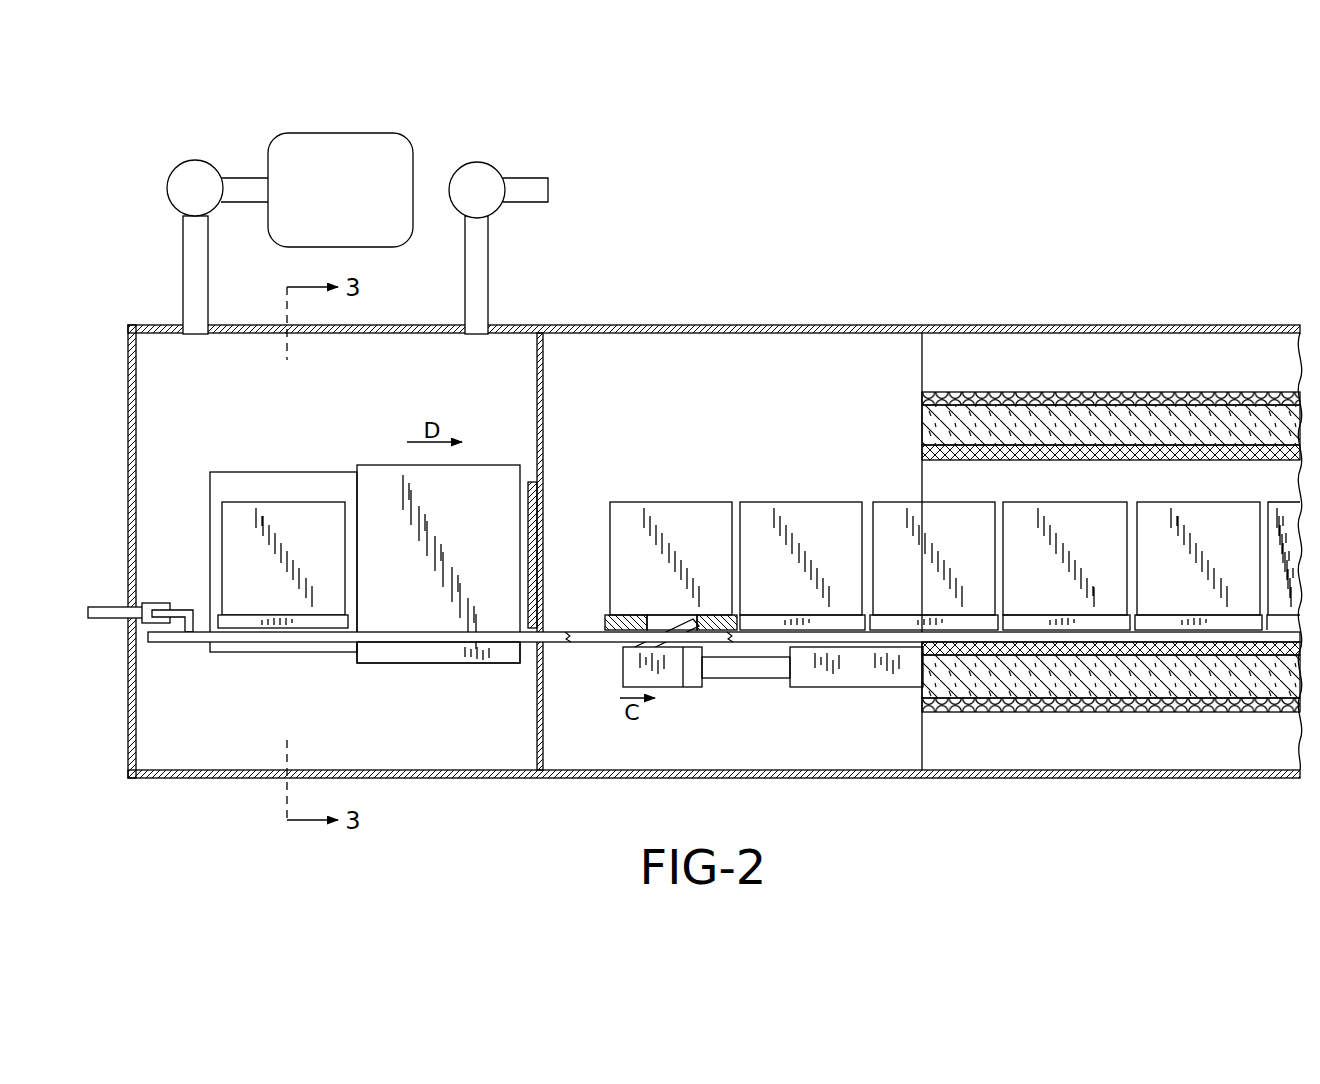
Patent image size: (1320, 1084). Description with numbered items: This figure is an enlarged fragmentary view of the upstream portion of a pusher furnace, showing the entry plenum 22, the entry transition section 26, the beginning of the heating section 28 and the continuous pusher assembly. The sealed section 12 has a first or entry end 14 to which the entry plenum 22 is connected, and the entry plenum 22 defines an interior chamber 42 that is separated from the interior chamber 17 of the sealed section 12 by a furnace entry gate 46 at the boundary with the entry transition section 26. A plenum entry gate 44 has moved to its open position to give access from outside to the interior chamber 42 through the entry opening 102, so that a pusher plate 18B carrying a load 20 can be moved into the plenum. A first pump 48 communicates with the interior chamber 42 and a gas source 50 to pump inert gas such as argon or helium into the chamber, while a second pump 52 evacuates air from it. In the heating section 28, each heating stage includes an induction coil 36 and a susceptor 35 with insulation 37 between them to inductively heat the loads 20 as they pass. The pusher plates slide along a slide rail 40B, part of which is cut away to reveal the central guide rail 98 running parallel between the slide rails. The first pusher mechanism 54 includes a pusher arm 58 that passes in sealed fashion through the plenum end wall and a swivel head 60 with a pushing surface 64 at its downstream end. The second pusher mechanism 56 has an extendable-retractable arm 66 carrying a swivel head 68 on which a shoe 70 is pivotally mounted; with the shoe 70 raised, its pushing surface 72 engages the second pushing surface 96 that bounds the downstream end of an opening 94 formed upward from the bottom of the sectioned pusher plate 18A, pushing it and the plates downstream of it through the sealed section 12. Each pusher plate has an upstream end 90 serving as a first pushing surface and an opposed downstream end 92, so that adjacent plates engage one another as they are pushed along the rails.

The sealed section 12 is at (966, 318).
The first or entry end 14 is at (542, 325).
The interior chamber 17 is at (1212, 360).
The pusher plate 18A is at (611, 632).
The pusher plate 18B is at (308, 628).
The load 20 is at (308, 514).
The entry plenum 22 is at (407, 779).
The entry transition section 26 is at (727, 322).
The heating section 28 is at (1160, 324).
The susceptor 35 is at (1098, 444).
The induction coil 36 is at (1041, 390).
The insulation 37 is at (921, 421).
The slide rail 40B is at (405, 643).
The interior chamber 42 is at (482, 733).
The plenum entry gate 44 is at (488, 476).
The furnace entry gate 46 is at (532, 527).
The first pump 48 is at (191, 161).
The gas source 50 is at (337, 133).
The second pump 52 is at (476, 161).
The first pusher mechanism 54 is at (165, 632).
The second pusher mechanism 56 is at (790, 692).
The pusher arm 58 is at (103, 620).
The swivel head 60 is at (178, 609).
The pushing surface 64 is at (200, 612).
The extendable-retractable arm 66 is at (760, 676).
The swivel head 68 is at (693, 684).
The shoe 70 is at (674, 656).
The pushing surface 72 is at (688, 619).
The upstream end 90 is at (195, 634).
The downstream end 92 is at (355, 618).
The opening 94 is at (622, 620).
The second pushing surface 96 is at (656, 620).
The central guide rail 98 is at (580, 643).
The entry opening 102 is at (241, 484).